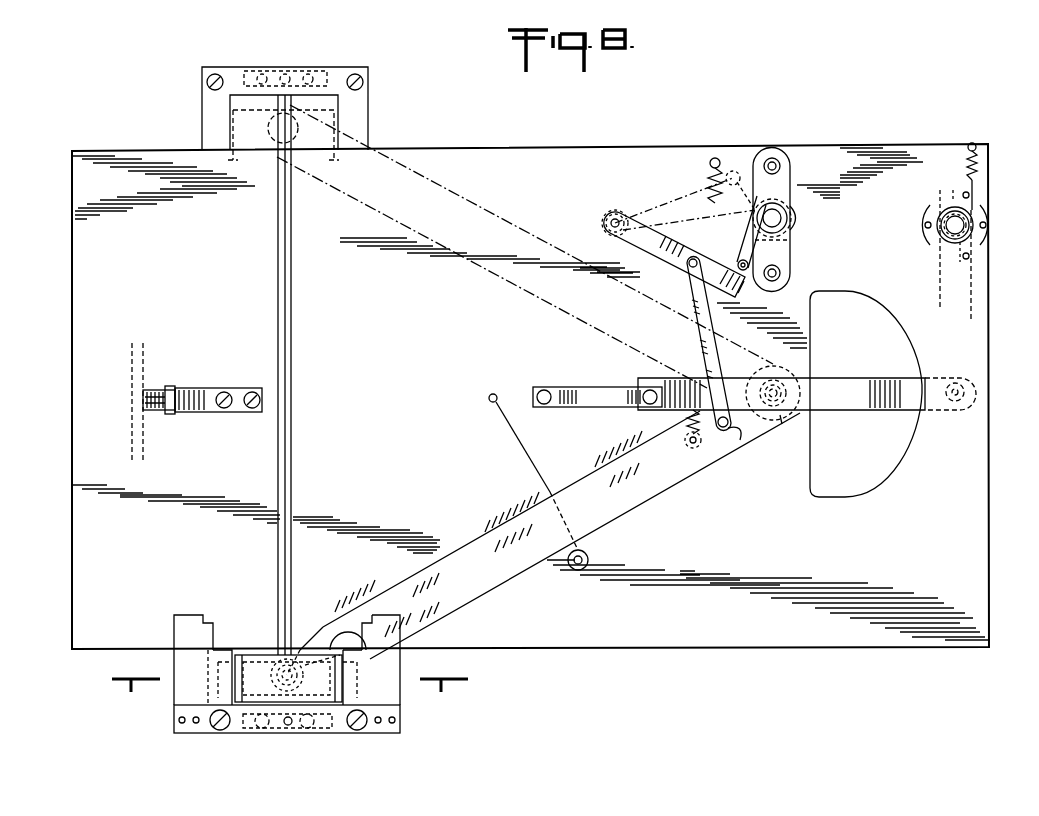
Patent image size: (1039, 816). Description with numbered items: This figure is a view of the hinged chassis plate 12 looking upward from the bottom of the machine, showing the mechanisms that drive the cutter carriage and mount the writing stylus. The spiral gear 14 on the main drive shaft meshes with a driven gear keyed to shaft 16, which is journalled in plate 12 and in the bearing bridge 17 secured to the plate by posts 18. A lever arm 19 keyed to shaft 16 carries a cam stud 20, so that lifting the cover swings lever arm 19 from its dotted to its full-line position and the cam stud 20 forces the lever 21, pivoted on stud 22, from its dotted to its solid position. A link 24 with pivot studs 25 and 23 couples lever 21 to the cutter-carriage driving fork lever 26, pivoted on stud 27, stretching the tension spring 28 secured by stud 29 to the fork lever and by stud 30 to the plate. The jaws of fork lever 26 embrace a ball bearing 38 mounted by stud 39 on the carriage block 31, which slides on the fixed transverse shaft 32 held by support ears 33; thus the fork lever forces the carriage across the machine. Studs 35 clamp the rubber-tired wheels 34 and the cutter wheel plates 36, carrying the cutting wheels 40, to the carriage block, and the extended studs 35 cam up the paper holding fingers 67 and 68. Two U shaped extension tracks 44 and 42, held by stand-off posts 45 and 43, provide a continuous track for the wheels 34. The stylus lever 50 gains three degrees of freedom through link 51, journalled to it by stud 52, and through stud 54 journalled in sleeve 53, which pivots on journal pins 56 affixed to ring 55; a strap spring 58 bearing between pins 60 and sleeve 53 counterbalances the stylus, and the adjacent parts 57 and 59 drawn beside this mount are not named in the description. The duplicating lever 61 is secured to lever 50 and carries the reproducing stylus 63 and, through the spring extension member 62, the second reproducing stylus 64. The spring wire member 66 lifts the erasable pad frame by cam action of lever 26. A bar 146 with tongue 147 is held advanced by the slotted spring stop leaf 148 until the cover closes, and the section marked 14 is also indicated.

The hinged chassis plate 12 is at (476, 147).
The spiral gear 14 is at (290, 702).
The shaft 16 is at (778, 216).
The bearing bridge 17 is at (780, 242).
The posts 18 is at (782, 168).
The lever arm 19 is at (744, 248).
The cam stud 20 is at (746, 271).
The lever 21 is at (660, 246).
The stud 22 is at (615, 210).
The pivot stud 23 is at (686, 270).
The link 24 is at (690, 292).
The pivot stud 25 is at (723, 433).
The cutter-carriage driving fork lever 26 is at (640, 500).
The stud 27 is at (776, 366).
The tension spring 28 is at (710, 195).
The stud 29 is at (688, 447).
The stud 30 is at (715, 157).
The carriage block 31 is at (262, 656).
The fixed transverse shaft 32 is at (292, 410).
The support ears 33 is at (320, 70).
The rubber-tired wheels 34 is at (262, 660).
The studs 35 is at (212, 676).
The cutter wheel plates 36 is at (280, 664).
The ball bearing 38 is at (312, 662).
The stud 39 is at (310, 640).
The cutting wheels 40 is at (262, 676).
The U shaped extension track 42 is at (372, 698).
The stand-off posts 43 is at (220, 731).
The U shaped extension track 44 is at (368, 118).
The stand-off posts 45 is at (218, 74).
The lever 50 is at (912, 378).
The link 51 is at (938, 300).
The stud 52 is at (958, 402).
The sleeve 53 is at (938, 212).
The stud 54 is at (950, 228).
The ring 55 is at (940, 190).
The journal pins 56 is at (954, 190).
The spring 57 is at (978, 165).
The strap spring 58 is at (986, 230).
The rod 59 is at (975, 192).
The pins 60 is at (970, 197).
The duplicating lever 61 is at (790, 427).
The spring extension member 62 is at (572, 387).
The reproducing stylus 63 is at (648, 405).
The second reproducing stylus 64 is at (544, 405).
The spring wire member 66 is at (522, 456).
The paper holding finger 67 is at (396, 620).
The paper holding finger 68 is at (195, 618).
The bar 146 is at (130, 345).
The tongue 147 is at (160, 388).
The slotted spring stop leaf 148 is at (195, 388).